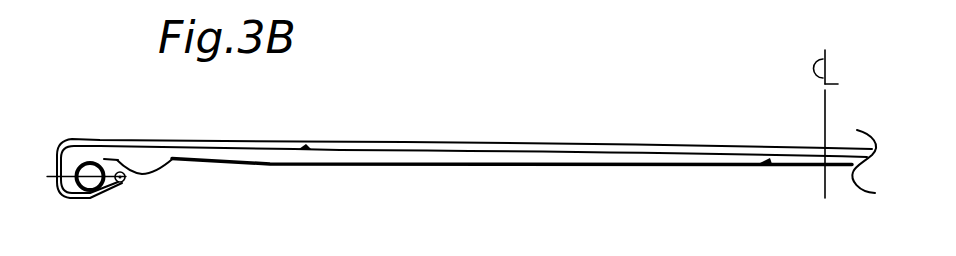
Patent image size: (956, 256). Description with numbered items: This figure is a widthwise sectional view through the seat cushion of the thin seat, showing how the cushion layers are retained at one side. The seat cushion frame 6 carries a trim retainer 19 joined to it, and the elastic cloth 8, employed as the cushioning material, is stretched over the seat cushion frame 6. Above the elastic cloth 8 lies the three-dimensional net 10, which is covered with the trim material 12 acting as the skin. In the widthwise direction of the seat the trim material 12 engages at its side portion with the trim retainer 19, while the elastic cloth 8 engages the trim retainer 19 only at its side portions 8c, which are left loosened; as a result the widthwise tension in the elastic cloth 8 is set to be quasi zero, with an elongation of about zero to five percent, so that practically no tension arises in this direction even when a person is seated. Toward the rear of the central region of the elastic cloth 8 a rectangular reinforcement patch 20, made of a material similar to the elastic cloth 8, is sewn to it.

The seat cushion frame 6 is at (105, 161).
The elastic cloth 8 is at (452, 165).
The side portions 8c is at (157, 173).
The 3-D net 10 is at (380, 155).
The trim material 12 is at (348, 147).
The trim retainer 19 is at (120, 183).
The reinforcement patch 20 is at (770, 163).